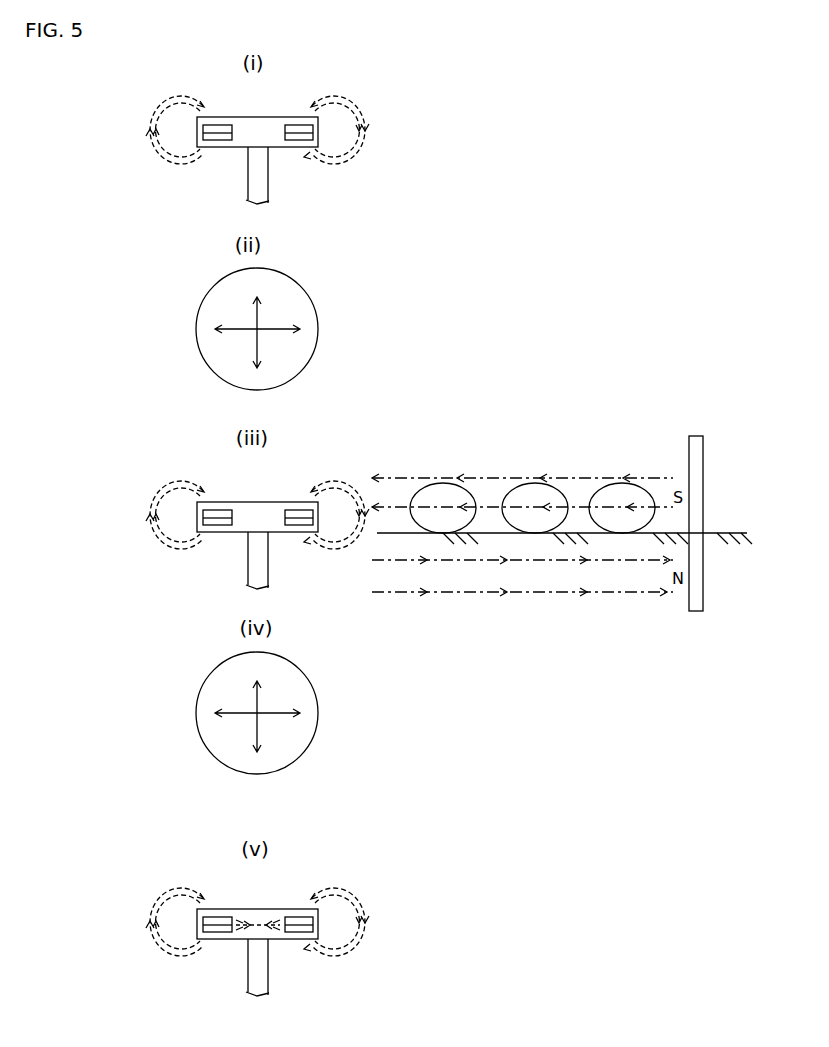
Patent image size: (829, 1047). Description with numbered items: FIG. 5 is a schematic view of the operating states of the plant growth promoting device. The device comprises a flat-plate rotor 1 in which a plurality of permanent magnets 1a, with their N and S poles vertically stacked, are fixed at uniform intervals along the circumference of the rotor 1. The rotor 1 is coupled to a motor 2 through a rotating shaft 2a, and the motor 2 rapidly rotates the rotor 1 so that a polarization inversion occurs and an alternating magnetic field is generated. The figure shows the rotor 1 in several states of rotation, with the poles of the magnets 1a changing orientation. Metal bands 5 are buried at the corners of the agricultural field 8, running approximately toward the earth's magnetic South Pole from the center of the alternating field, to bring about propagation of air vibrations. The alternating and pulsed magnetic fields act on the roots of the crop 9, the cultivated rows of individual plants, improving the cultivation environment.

The flat-plate rotor 1 is at (257, 544).
The permanent magnet 1a is at (267, 559).
The motor 2 is at (250, 562).
The rotating shaft 2a is at (230, 571).
The metal band 5 is at (693, 451).
The agricultural field 8 is at (720, 540).
The crop 9 is at (532, 487).